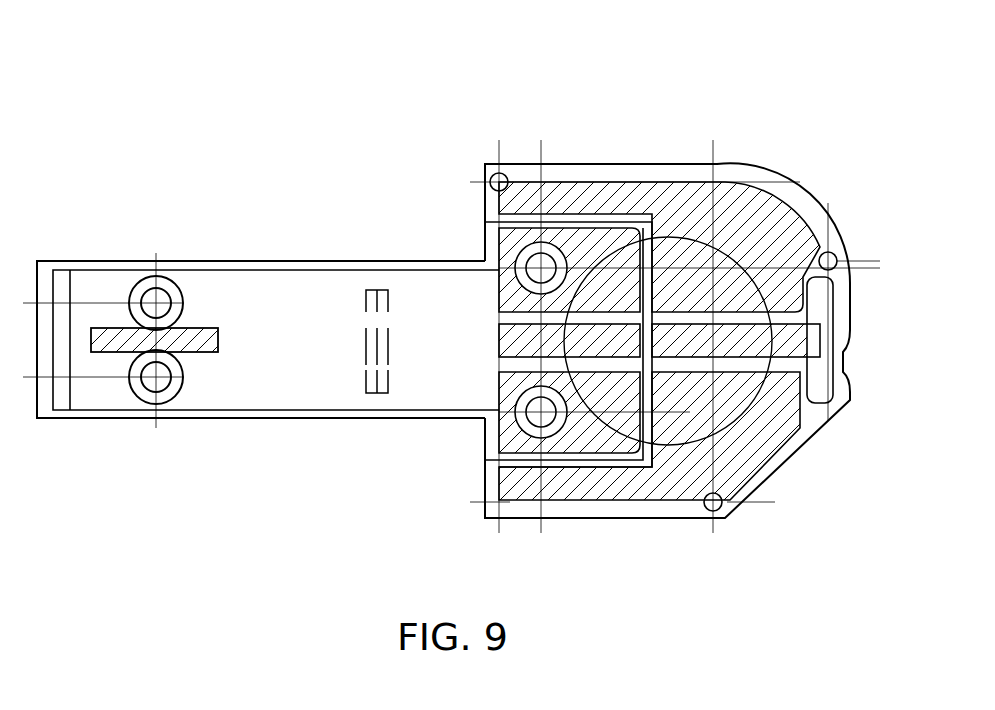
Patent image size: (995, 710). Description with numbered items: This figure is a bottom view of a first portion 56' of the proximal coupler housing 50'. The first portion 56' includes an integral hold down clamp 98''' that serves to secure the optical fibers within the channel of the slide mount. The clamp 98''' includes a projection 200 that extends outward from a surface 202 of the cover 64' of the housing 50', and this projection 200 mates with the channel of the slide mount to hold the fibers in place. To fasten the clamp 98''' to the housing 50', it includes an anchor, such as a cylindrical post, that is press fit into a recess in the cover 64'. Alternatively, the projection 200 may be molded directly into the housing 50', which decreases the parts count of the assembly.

The proximal coupler housing 50' is at (688, 287).
The first portion 56' is at (687, 444).
The cover 64' is at (268, 387).
The hold down clamp 98''' is at (235, 340).
The projection 200 is at (199, 353).
The surface 202 is at (449, 357).